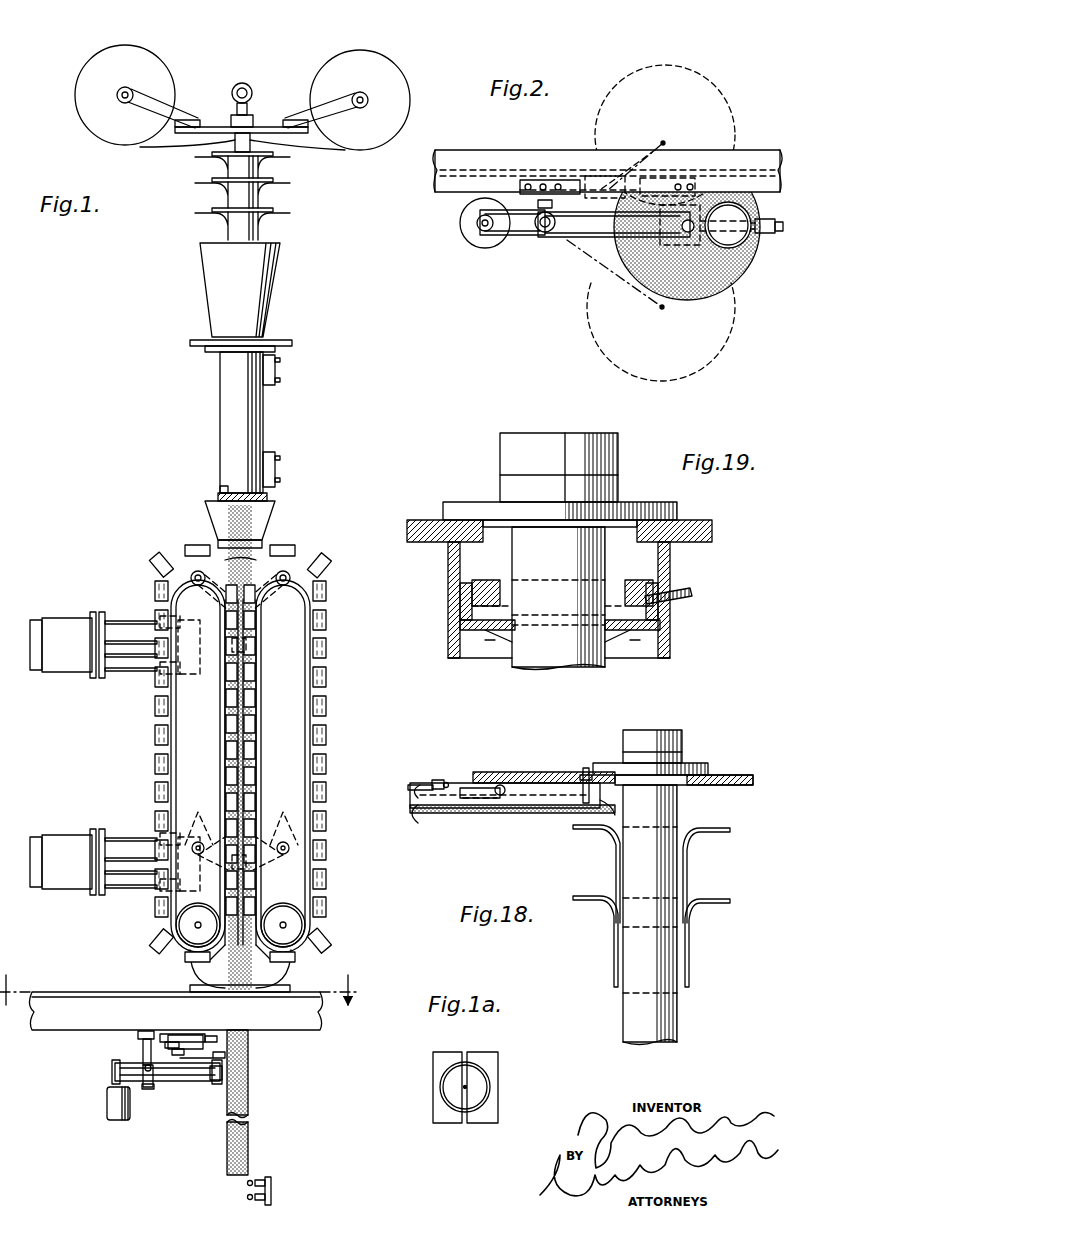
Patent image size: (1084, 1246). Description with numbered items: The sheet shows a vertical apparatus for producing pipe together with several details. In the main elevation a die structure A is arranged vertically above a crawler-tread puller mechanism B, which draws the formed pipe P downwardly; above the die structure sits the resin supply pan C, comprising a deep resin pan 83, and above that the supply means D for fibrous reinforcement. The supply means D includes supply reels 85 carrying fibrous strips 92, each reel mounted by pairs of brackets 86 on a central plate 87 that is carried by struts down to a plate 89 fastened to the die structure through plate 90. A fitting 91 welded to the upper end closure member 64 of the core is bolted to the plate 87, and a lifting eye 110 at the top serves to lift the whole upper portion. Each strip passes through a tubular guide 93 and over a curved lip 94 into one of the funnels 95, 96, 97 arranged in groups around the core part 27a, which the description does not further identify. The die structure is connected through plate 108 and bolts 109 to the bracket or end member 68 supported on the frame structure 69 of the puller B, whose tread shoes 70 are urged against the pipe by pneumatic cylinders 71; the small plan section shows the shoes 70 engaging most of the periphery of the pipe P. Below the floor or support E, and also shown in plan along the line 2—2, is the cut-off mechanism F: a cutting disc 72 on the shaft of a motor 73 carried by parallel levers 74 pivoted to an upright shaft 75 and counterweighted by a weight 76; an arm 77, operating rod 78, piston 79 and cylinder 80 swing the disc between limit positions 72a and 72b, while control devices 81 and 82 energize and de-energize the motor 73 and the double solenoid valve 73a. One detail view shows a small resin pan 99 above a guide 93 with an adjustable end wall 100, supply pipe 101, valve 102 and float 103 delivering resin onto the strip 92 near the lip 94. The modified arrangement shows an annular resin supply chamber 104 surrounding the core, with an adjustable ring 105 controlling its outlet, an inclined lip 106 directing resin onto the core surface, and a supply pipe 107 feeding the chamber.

In FIG. 1, the supply reels 85 is at (98, 62).
In FIG. 1, the brackets 86 is at (168, 118).
In FIG. 1, the lifting eye 110 is at (246, 82).
In FIG. 1, the central plate 87 is at (288, 140).
In FIG. 19, the central plate 87 is at (712, 530).
In FIG. 18, the central plate 87 is at (750, 784).
In FIG. 1, the shaft 27a is at (232, 140).
In FIG. 19, the shaft 27a is at (606, 566).
In FIG. 18, the shaft 27a is at (678, 809).
In FIG. 1, the fibrous strip 92 is at (140, 150).
In FIG. 18, the fibrous strip 92 is at (412, 818).
In FIG. 1, the guide funnel 95 is at (232, 168).
In FIG. 18, the guide funnel 95 is at (688, 870).
In FIG. 1, the funnel 96 is at (230, 196).
In FIG. 18, the funnel 96 is at (688, 950).
In FIG. 1, the funnel 97 is at (230, 228).
In FIG. 1, the resin pan 83 is at (210, 290).
In FIG. 1, the plate 89 is at (190, 343).
In FIG. 1, the plate 90 is at (220, 350).
In FIG. 1, the bolts 109 is at (222, 488).
In FIG. 1, the plate 108 is at (217, 495).
In FIG. 1, the bracket 68 is at (205, 504).
In FIG. 1, the frame structure 69 is at (218, 545).
In FIG. 1, the tread shoes 70 is at (236, 715).
In FIG. 1A, the tread shoes 70 is at (433, 1112).
In FIG. 1, the pneumatic cylinders 71 is at (62, 626).
In FIG. 1, the cutting disc 72 is at (250, 1058).
In FIG. 2, the cutting disc 72 is at (735, 270).
In FIG. 2, the dot-dash circle 72a is at (712, 366).
In FIG. 2, the dot-dash circle 72b is at (724, 98).
In FIG. 1, the motor 73 is at (216, 1087).
In FIG. 2, the motor 73 is at (612, 222).
In FIG. 1, the double solenoid valve 73a is at (178, 1058).
In FIG. 1, the parallel arms or levers 74 is at (162, 1085).
In FIG. 2, the parallel arms or levers 74 is at (503, 240).
In FIG. 1, the upright shaft 75 is at (149, 1087).
In FIG. 2, the upright shaft 75 is at (543, 236).
In FIG. 1, the weight 76 is at (108, 1108).
In FIG. 2, the weight 76 is at (460, 228).
In FIG. 1, the arm 77 is at (140, 1042).
In FIG. 2, the arm 77 is at (520, 188).
In FIG. 1, the operating rod 78 is at (165, 1036).
In FIG. 2, the operating rod 78 is at (572, 180).
In FIG. 2, the piston 79 is at (618, 180).
In FIG. 1, the cylinder 80 is at (200, 1022).
In FIG. 2, the cylinder 80 is at (600, 178).
In FIG. 1, the control device 81 is at (248, 1183).
In FIG. 2, the control device 81 is at (748, 214).
In FIG. 1, the control device 82 is at (248, 1197).
In FIG. 19, the upper end closure member 64 is at (619, 492).
In FIG. 18, the upper end closure member 64 is at (683, 753).
In FIG. 19, the fitting 91 is at (678, 512).
In FIG. 18, the fitting 91 is at (709, 769).
In FIG. 19, the annular resin supply chamber 104 is at (472, 578).
In FIG. 19, the adjustable ring 105 is at (640, 586).
In FIG. 19, the downwardly inclined lip 106 is at (614, 640).
In FIG. 19, the supply pipe 107 is at (688, 600).
In FIG. 18, the small resin pan 99 is at (432, 780).
In FIG. 18, the adjustable end wall 100 is at (588, 768).
In FIG. 18, the supply pipe 101 is at (412, 786).
In FIG. 18, the valve 102 is at (440, 785).
In FIG. 18, the float 103 is at (520, 763).
In FIG. 18, the tubular guide 93 is at (462, 812).
In FIG. 18, the curved element 94 is at (612, 838).
In FIG. 1, the section line 2— 2 is at (180, 980).
In FIG. 1, the die structure A is at (218, 428).
In FIG. 1, the puller mechanism B is at (152, 726).
In FIG. 1, the resin supply pan C is at (282, 290).
In FIG. 1, the supply means D is at (72, 126).
In FIG. 1, the structural support E is at (62, 1034).
In FIG. 1, the cut-off mechanism F is at (128, 1054).
In FIG. 2, the cut-off mechanism F is at (573, 258).
In FIG. 1, the pipe P is at (260, 524).
In FIG. 1A, the pipe P is at (492, 1085).